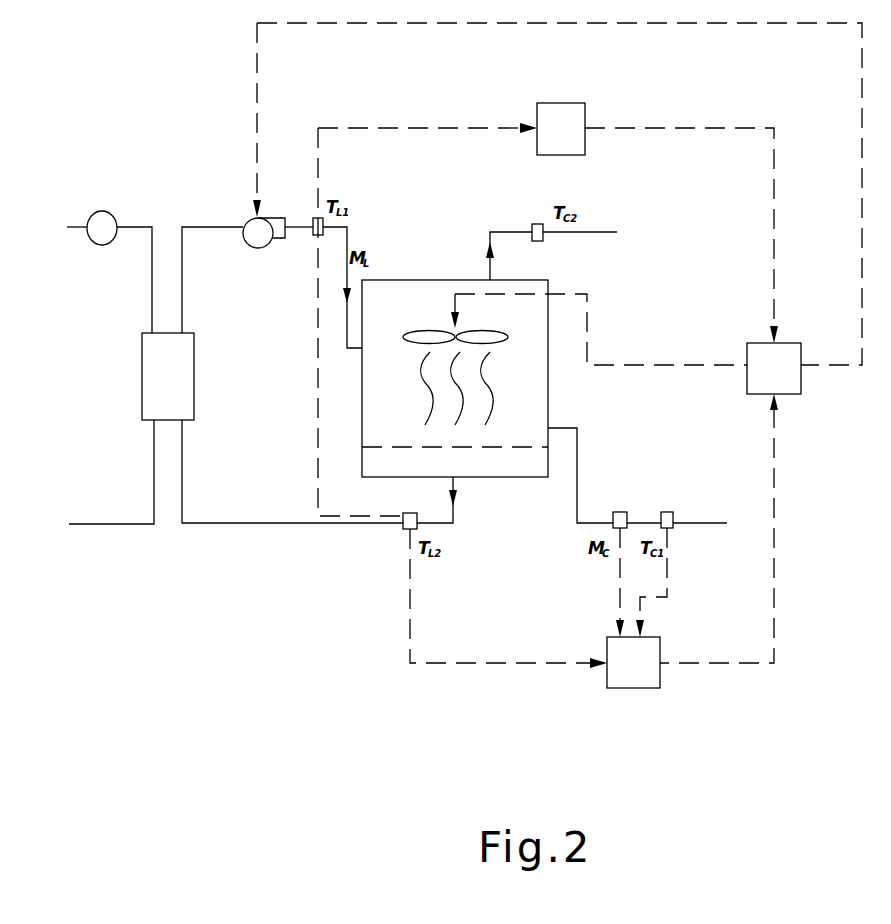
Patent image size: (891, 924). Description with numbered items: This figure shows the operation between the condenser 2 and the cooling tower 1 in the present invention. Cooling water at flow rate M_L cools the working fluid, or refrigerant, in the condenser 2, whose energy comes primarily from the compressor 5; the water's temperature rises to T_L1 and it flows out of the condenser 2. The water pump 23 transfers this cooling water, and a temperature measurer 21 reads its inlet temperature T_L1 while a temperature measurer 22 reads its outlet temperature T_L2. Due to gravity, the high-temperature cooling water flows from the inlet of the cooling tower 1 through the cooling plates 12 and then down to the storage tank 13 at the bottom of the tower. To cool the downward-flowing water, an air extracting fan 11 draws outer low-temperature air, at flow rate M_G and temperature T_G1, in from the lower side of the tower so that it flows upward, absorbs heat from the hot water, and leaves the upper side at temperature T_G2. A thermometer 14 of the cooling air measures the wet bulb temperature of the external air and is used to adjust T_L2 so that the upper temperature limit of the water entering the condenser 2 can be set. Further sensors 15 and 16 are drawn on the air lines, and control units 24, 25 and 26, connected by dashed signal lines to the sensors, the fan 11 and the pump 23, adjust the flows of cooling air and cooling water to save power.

The tank 1 is at (477, 378).
The condenser 2 is at (192, 376).
The compressor 5 is at (106, 222).
The air extracting fan 11 is at (452, 323).
The cooling plates 12 is at (433, 388).
The storage tank 13 is at (455, 461).
The thermometer 14 is at (633, 508).
The temperature sensor 15 is at (556, 247).
The temperature sensor 16 is at (681, 508).
The temperature measurer 21 is at (307, 214).
The temperature measurer 22 is at (396, 509).
The water pump 23 is at (258, 238).
The controller 24 is at (636, 677).
The controller 25 is at (558, 123).
The controller 26 is at (785, 382).